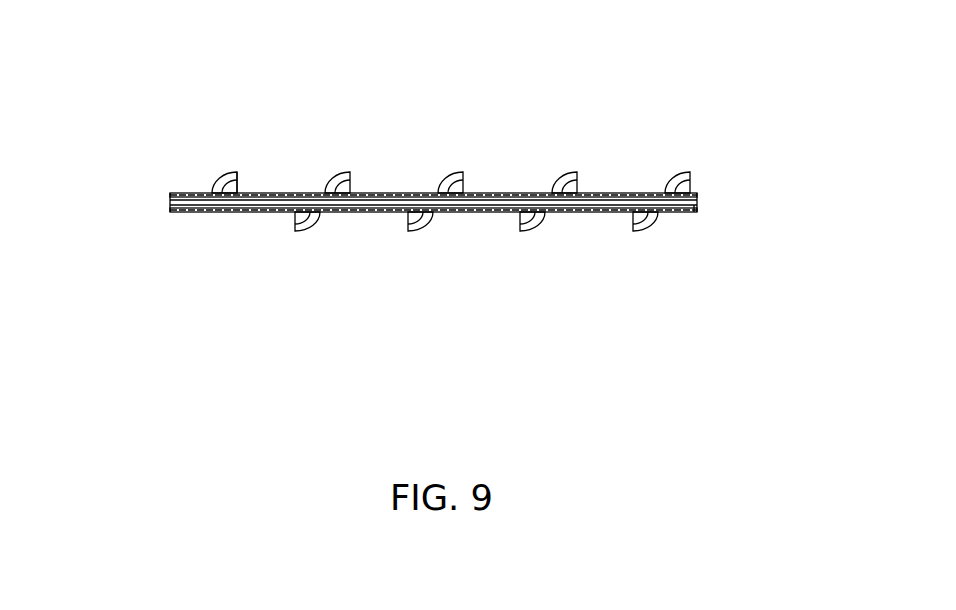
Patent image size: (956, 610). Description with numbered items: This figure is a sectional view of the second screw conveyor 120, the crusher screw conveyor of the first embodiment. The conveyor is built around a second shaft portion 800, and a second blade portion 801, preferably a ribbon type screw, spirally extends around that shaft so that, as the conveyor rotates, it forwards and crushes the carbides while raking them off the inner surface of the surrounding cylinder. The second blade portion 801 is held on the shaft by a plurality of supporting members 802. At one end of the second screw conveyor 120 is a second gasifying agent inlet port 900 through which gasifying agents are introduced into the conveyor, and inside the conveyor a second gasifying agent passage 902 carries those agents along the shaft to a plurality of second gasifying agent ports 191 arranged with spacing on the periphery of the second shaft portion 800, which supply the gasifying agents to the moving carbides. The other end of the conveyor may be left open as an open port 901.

The second screw conveyor 120 is at (460, 86).
The second gasifying agent inlet port 900 is at (170, 202).
The open port 901 is at (698, 200).
The second gasifying agent passage 902 is at (583, 197).
The second shaft portion 800 is at (200, 212).
The second blade portion 801 is at (225, 186).
The supporting members 802 is at (238, 184).
The second gasifying agent ports 191 is at (408, 194).